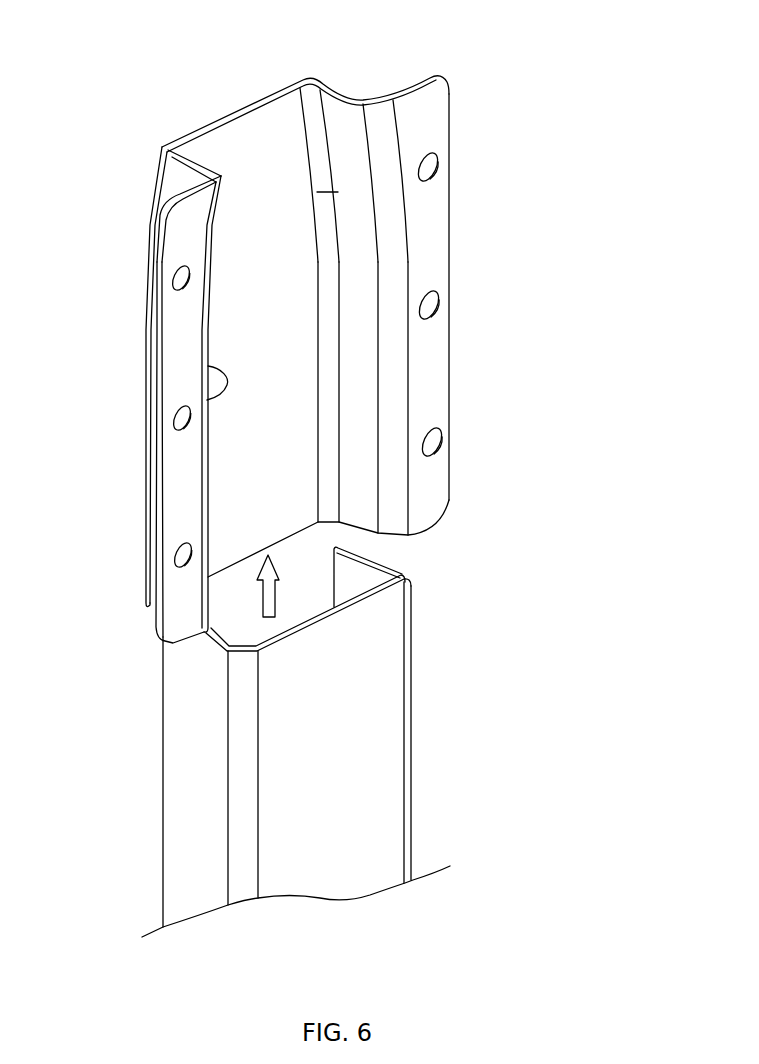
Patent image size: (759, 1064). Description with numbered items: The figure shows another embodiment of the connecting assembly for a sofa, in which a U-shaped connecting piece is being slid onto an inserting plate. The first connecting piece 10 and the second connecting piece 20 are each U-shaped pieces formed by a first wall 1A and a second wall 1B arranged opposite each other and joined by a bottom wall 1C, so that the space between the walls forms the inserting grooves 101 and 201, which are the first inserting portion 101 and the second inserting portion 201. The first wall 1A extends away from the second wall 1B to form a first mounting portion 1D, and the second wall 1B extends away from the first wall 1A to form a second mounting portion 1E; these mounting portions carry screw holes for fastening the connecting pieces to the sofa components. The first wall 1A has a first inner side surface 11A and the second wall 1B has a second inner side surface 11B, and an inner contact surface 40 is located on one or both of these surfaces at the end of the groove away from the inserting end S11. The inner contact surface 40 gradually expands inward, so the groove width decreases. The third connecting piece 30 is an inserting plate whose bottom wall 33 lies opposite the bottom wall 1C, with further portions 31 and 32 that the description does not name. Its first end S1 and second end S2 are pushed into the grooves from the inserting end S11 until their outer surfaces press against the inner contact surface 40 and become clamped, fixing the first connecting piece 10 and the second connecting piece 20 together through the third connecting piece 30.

The first connecting piece 10 is at (597, 321).
The second connecting piece 20 is at (310, 336).
The first wall 1A is at (362, 232).
The second wall 1B is at (178, 181).
The bottom wall 1C is at (262, 133).
The first mounting portion 1D is at (433, 272).
The second mounting portion 1E is at (172, 344).
The first inner side surface 11A is at (370, 307).
The second inner side surface 11B is at (208, 398).
The inner contact surface 40 is at (180, 138).
The first inserting portion 101 is at (315, 352).
The second inserting portion 201 is at (310, 350).
The inserting end S11 is at (464, 528).
The third connecting piece 30 is at (117, 814).
The right side wall of column 31 is at (367, 580).
The left side wall of column 32 is at (192, 722).
The bottom wall 33 is at (390, 732).
The first end S1 is at (455, 619).
The second end S2 is at (407, 610).